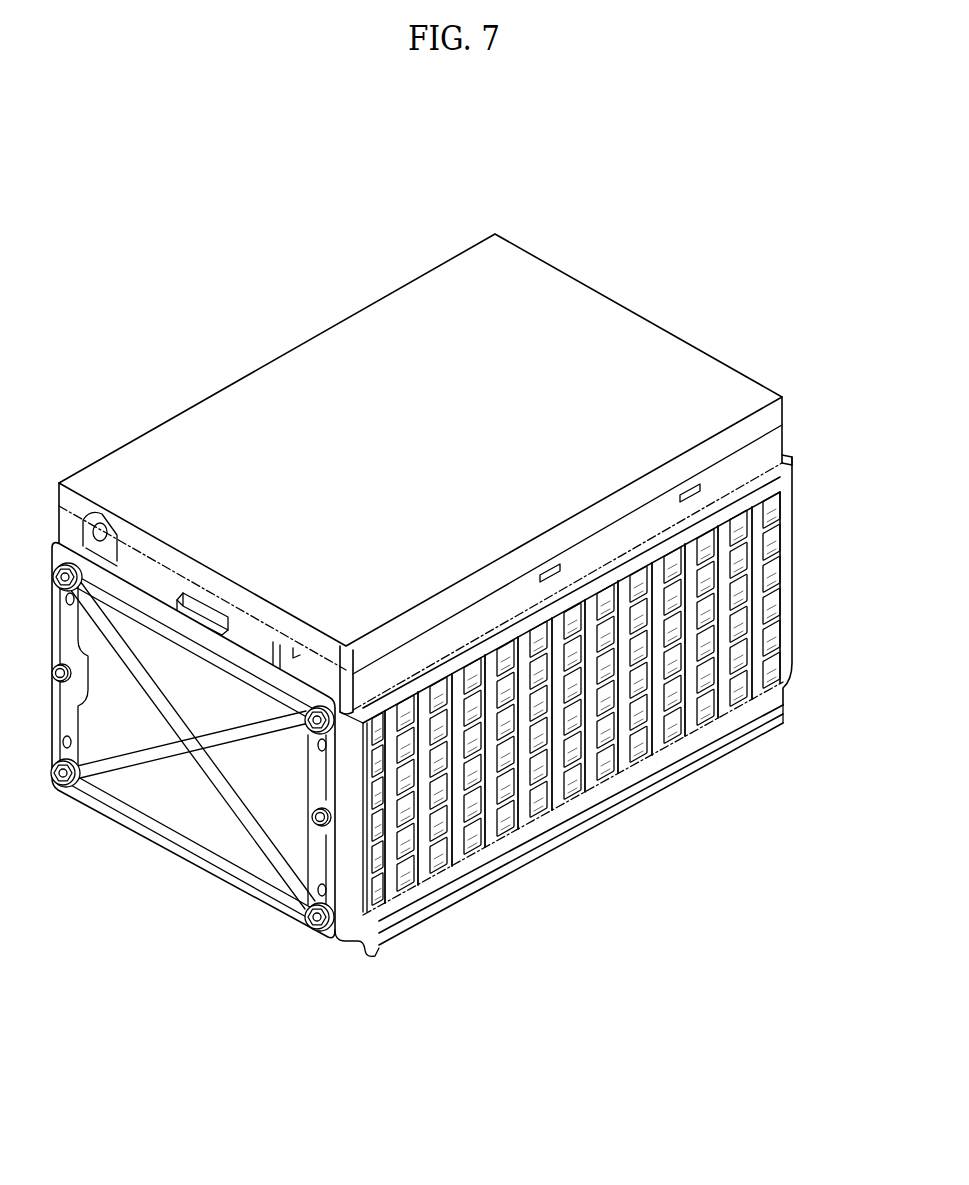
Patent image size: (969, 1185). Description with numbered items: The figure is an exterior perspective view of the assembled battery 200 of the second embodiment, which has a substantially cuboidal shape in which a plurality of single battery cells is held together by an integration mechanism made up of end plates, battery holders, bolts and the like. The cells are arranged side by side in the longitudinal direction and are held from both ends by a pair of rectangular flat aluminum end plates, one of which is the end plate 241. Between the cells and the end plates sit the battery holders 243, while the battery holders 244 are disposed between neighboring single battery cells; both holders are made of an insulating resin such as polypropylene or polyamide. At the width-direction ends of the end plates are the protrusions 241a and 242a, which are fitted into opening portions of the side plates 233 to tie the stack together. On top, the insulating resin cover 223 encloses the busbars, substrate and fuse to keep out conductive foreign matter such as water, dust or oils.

The assembled battery 200 is at (503, 215).
The cover 223 is at (188, 408).
The side plate 233 is at (580, 805).
The end plate 241 is at (195, 815).
The protrusion 241a is at (385, 933).
The protrusion 242a is at (792, 665).
The battery holder 243 is at (398, 918).
The battery holder 244 is at (419, 874).